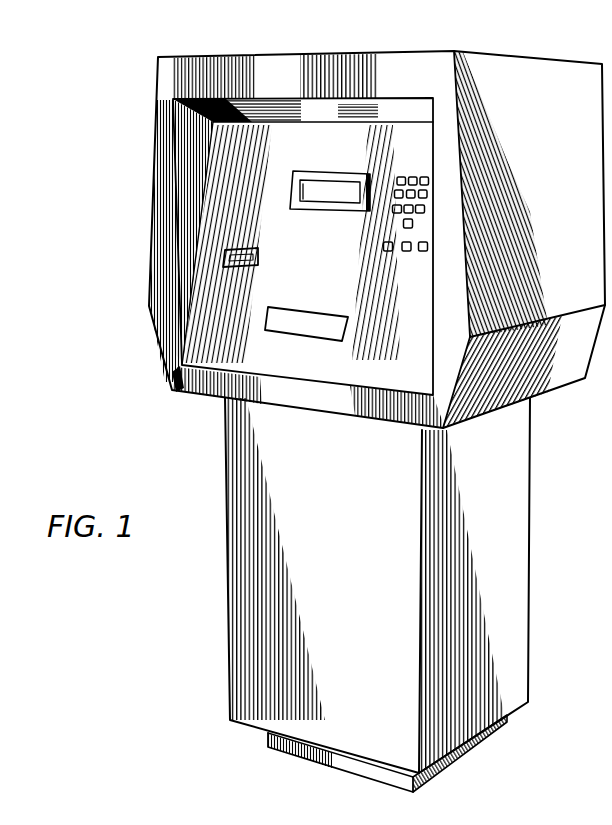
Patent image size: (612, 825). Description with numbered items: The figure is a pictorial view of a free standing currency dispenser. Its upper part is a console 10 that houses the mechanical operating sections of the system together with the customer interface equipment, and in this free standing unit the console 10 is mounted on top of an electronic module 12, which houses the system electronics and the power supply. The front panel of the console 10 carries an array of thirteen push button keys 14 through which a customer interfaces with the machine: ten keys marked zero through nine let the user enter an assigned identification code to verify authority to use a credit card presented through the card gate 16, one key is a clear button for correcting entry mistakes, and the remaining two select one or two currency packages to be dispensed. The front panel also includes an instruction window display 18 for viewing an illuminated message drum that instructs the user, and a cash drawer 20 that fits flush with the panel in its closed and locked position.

The console 10 is at (149, 296).
The electronic module 12 is at (530, 513).
The push button keys 14 is at (401, 262).
The card gate 16 is at (241, 268).
The instruction window display 18 is at (321, 213).
The cash drawer 20 is at (310, 309).